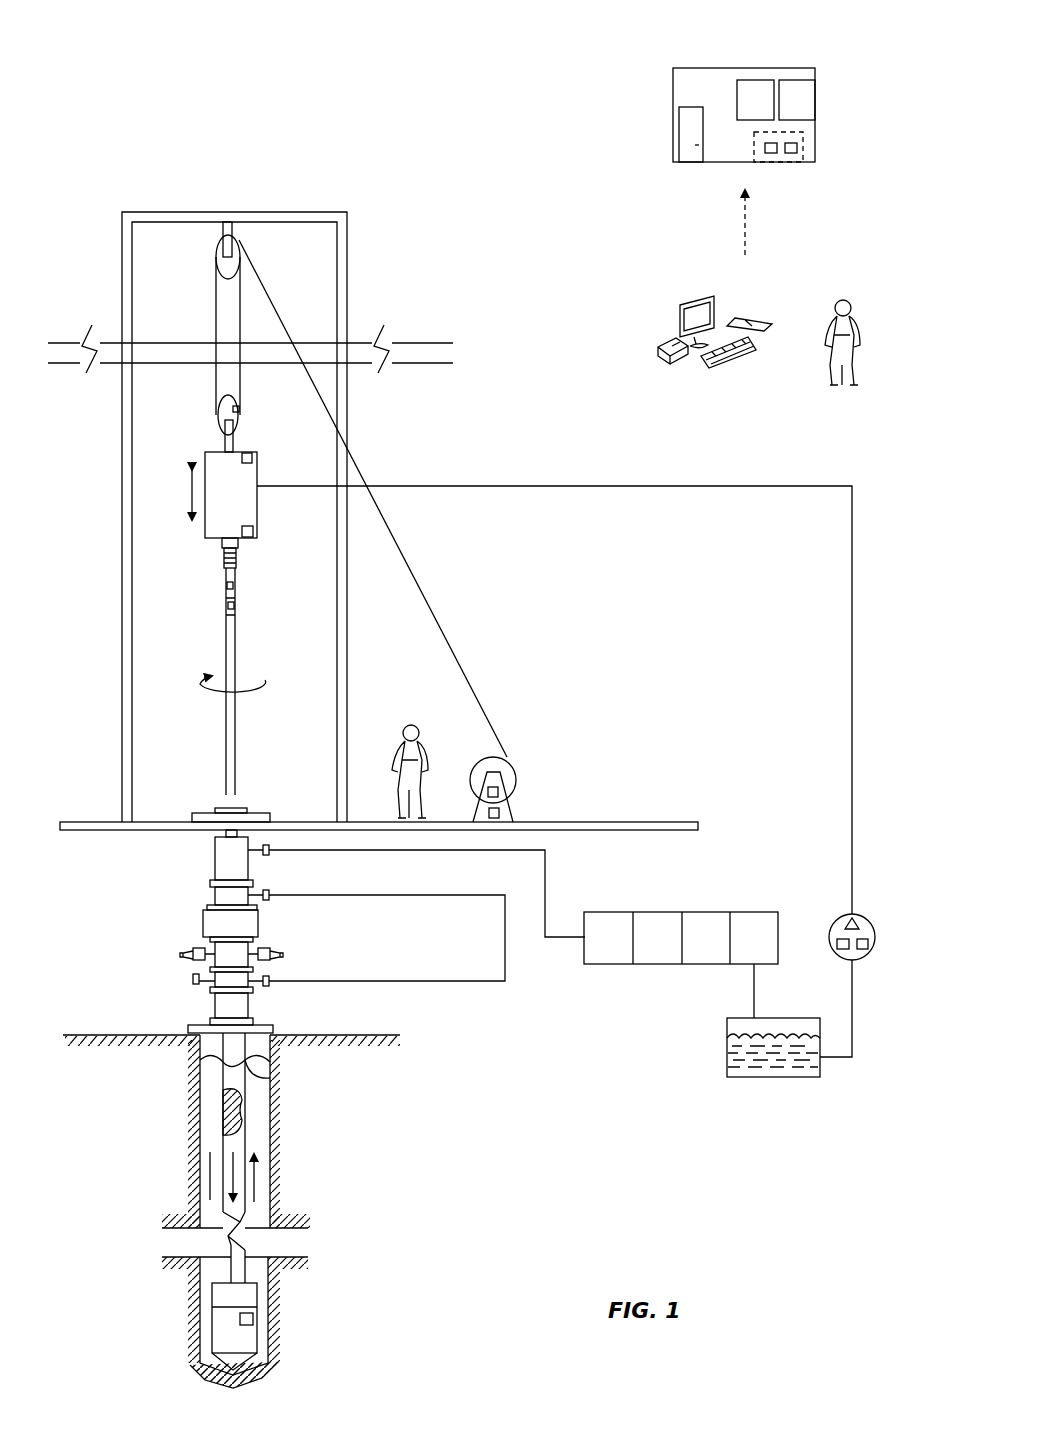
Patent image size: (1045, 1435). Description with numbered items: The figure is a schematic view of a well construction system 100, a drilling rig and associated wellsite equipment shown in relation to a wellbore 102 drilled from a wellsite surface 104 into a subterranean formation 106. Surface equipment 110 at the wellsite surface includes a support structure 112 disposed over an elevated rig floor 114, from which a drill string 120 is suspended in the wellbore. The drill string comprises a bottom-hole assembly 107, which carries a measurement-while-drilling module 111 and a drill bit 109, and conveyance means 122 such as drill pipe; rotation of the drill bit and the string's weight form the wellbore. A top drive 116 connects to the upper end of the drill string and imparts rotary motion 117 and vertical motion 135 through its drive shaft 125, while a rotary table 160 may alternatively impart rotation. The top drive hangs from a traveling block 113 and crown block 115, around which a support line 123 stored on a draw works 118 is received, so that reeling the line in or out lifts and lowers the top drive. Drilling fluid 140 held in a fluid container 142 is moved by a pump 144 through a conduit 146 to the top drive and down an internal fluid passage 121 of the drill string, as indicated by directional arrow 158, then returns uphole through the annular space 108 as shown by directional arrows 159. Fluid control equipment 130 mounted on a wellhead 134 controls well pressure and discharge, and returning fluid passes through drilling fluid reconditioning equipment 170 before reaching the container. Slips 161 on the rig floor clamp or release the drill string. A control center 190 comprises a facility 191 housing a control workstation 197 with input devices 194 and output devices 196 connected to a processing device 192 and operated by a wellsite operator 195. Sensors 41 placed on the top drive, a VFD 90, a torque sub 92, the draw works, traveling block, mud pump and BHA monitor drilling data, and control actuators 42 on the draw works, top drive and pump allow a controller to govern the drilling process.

The well construction system 100 is at (113, 48).
The wellbore 102 is at (270, 1100).
The wellsite surface 104 is at (325, 1033).
The subterranean formation 106 is at (282, 1296).
The bottom-hole assembly 107 is at (200, 1290).
The annular space 108 is at (258, 1140).
The drill bit 109 is at (220, 1358).
The surface equipment 110 is at (769, 467).
The measurement-while-drilling module 111 is at (212, 1325).
The support structure 112 is at (347, 290).
The traveling block 113 is at (218, 417).
The rig floor 114 is at (645, 820).
The crown block 115 is at (216, 255).
The top drive 116 is at (257, 497).
The rotary motion 117 is at (210, 678).
The draw works 118 is at (510, 757).
The drill string 120 is at (224, 725).
The internal fluid passage 121 is at (225, 1130).
The conveyance means 122 is at (226, 745).
The support line 123 is at (465, 675).
The drive shaft 125 is at (222, 548).
The fluid control equipment 130 is at (203, 920).
The wellhead 134 is at (210, 1020).
The vertical motion 135 is at (190, 495).
The drilling fluid 140 is at (800, 1067).
The fluid container 142 is at (745, 1078).
The pump 144 is at (875, 933).
The conduit 146 is at (853, 705).
The directional arrow 158 is at (240, 1195).
The directional arrows 159 is at (210, 1180).
The rotary table 160 is at (195, 813).
The slips 161 is at (222, 808).
The drilling fluid reconditioning equipment 170 is at (678, 912).
The control center 190 is at (685, 42).
The facility 191 is at (752, 68).
The processing device 192 is at (660, 354).
The input devices 194 is at (748, 318).
The wellsite operator 195 is at (408, 722).
The output devices 196 is at (680, 320).
The control workstation 197 is at (722, 282).
The sensors 41 is at (240, 410).
The control actuators 42 is at (253, 532).
The VFD 90 is at (803, 147).
The torque sub 92 is at (235, 616).